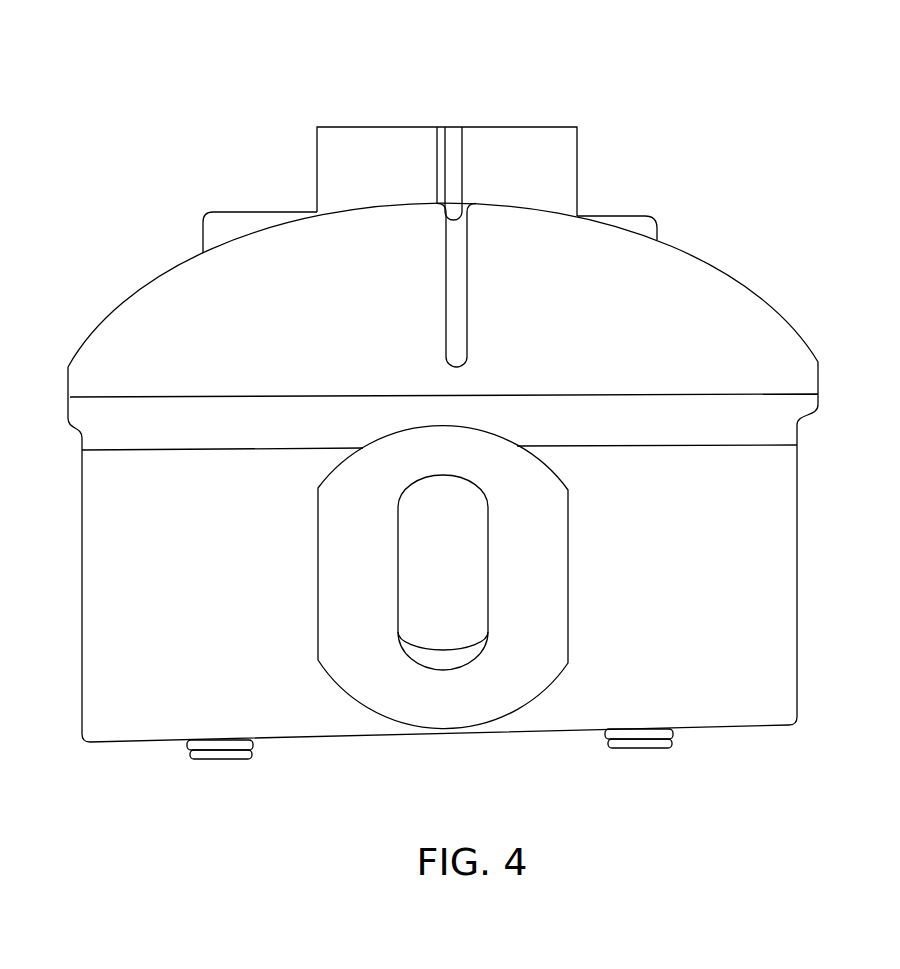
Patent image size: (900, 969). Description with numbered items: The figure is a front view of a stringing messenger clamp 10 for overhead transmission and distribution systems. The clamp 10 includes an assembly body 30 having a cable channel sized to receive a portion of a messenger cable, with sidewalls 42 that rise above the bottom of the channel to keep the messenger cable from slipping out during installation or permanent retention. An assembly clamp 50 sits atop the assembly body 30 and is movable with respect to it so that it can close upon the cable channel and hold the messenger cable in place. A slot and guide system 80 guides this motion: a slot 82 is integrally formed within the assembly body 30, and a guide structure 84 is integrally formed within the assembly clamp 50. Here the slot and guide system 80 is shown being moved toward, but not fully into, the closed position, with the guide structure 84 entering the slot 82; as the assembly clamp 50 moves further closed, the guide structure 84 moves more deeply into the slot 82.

The stringing messenger clamp 10 is at (798, 89).
The assembly body 30 is at (780, 612).
The sidewalls 42 is at (133, 343).
The assembly clamp 50 is at (382, 158).
The slot and guide system 80 is at (492, 196).
The slot 82 is at (452, 293).
The guide structure 84 is at (452, 158).